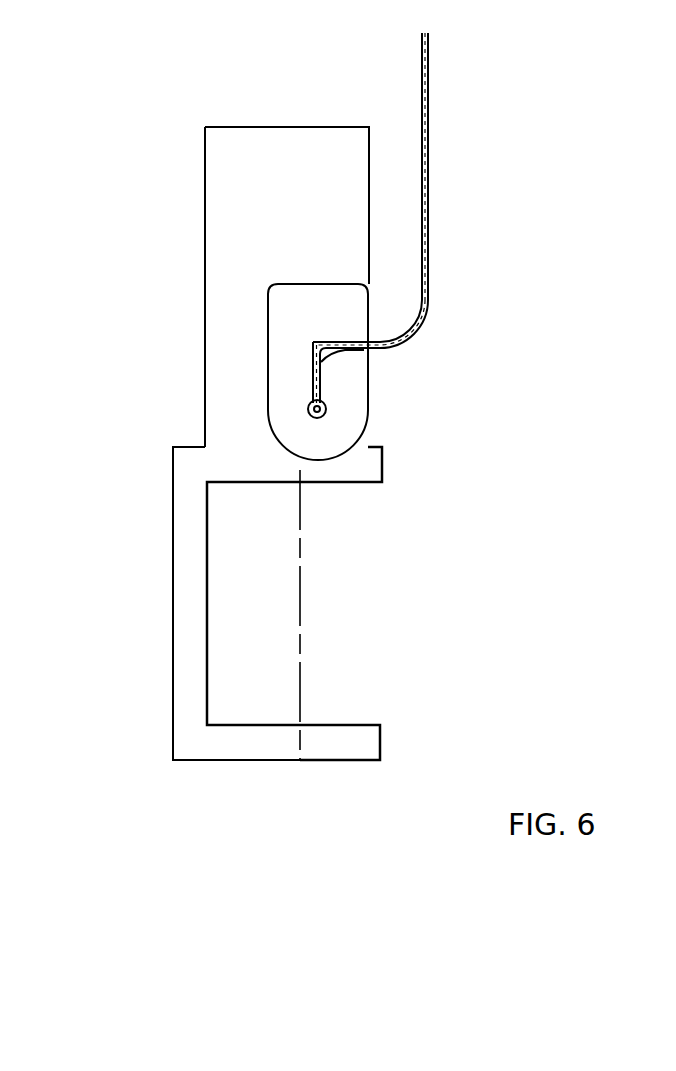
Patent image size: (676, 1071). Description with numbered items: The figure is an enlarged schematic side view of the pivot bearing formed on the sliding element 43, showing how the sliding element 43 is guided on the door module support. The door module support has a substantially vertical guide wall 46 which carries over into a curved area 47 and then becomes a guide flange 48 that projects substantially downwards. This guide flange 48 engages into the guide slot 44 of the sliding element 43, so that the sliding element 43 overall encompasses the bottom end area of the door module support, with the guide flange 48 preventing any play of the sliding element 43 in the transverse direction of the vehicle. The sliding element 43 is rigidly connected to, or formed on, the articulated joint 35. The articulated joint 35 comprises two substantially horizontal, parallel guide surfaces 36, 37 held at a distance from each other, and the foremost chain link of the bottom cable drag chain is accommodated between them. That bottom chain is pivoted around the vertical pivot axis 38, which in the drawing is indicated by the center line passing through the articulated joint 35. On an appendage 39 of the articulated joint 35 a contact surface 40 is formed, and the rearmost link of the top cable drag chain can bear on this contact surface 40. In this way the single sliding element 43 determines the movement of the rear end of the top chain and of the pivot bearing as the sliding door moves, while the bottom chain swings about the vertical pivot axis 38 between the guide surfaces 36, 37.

The articulated joint 35 is at (188, 615).
The guide surface 36 is at (372, 741).
The guide surface 37 is at (383, 483).
The vertical pivot axis 38 is at (300, 612).
The appendage 39 is at (235, 239).
The contact surface 40 is at (270, 127).
The sliding element 43 is at (293, 329).
The guide slot 44 is at (310, 417).
The guide wall 46 is at (427, 88).
The curved area 47 is at (390, 345).
The guide flange 48 is at (322, 385).